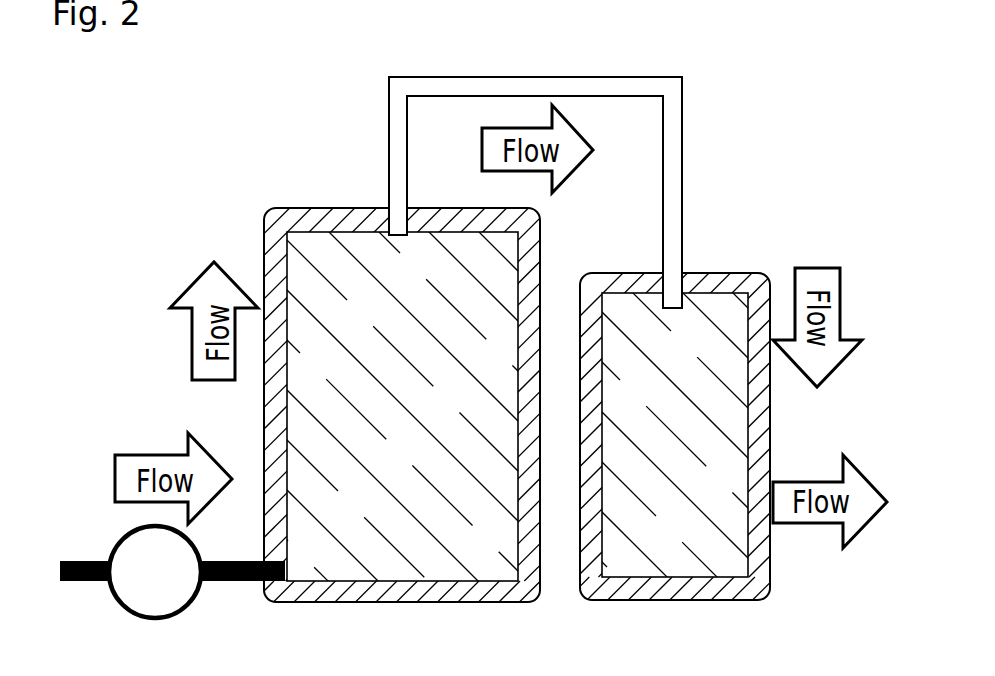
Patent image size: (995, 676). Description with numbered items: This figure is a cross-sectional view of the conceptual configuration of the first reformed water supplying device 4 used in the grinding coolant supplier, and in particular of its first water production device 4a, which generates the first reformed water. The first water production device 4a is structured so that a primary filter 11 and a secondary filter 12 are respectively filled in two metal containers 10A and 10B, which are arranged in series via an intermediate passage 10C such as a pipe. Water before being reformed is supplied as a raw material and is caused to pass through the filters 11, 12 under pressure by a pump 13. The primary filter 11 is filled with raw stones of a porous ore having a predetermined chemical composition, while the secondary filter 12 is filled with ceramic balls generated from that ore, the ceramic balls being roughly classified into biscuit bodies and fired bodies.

The first reformed water supplying device 4 is at (461, 338).
The first water production device 4a is at (278, 235).
The primary filter 11 is at (303, 297).
The secondary filter 12 is at (723, 330).
The pump 13 is at (128, 557).
The metal container 10A is at (461, 338).
The metal container 10B is at (517, 338).
The intermediate passage 10C is at (675, 182).